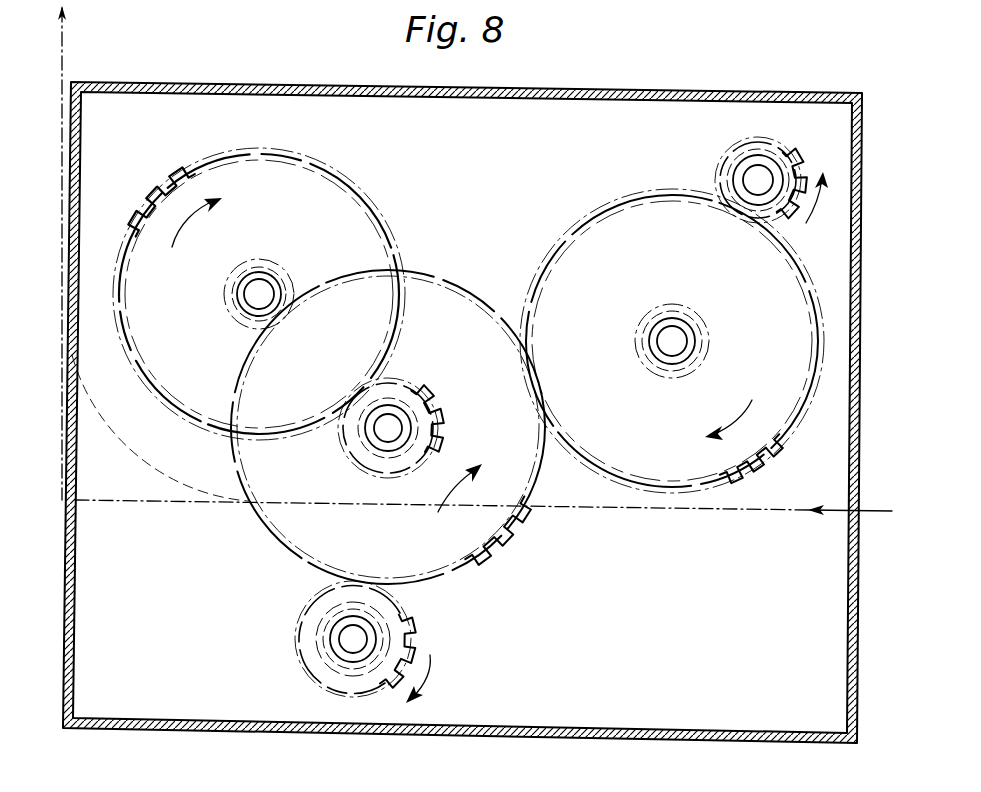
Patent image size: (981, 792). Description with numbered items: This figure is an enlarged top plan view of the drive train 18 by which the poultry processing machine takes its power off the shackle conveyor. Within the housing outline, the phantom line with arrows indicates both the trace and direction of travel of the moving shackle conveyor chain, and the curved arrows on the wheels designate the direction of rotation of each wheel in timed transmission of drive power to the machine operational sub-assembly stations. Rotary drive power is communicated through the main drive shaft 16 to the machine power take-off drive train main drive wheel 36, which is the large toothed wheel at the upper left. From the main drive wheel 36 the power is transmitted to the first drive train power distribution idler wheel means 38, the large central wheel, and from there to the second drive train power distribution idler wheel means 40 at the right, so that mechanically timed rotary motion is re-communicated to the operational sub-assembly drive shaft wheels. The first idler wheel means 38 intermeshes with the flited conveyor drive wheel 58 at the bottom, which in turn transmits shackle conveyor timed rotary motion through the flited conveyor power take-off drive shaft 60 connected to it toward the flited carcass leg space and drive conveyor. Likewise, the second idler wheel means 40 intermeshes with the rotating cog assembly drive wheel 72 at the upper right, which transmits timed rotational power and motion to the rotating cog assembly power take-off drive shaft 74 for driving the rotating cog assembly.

The drive train 18 is at (528, 147).
The machine power take-off drive train main drive wheel 36 is at (188, 176).
The main drive shaft 16 is at (264, 290).
The first drive train power distribution idler wheel means 38 is at (512, 535).
The second drive train power distribution idler wheel means 40 is at (757, 462).
The rotating cog assembly drive wheel 72 is at (788, 162).
The rotating cog assembly power take-off drive shaft 74 is at (748, 176).
The flited conveyor drive wheel 58 is at (415, 644).
The flited conveyor power take-off drive shaft 60 is at (362, 632).